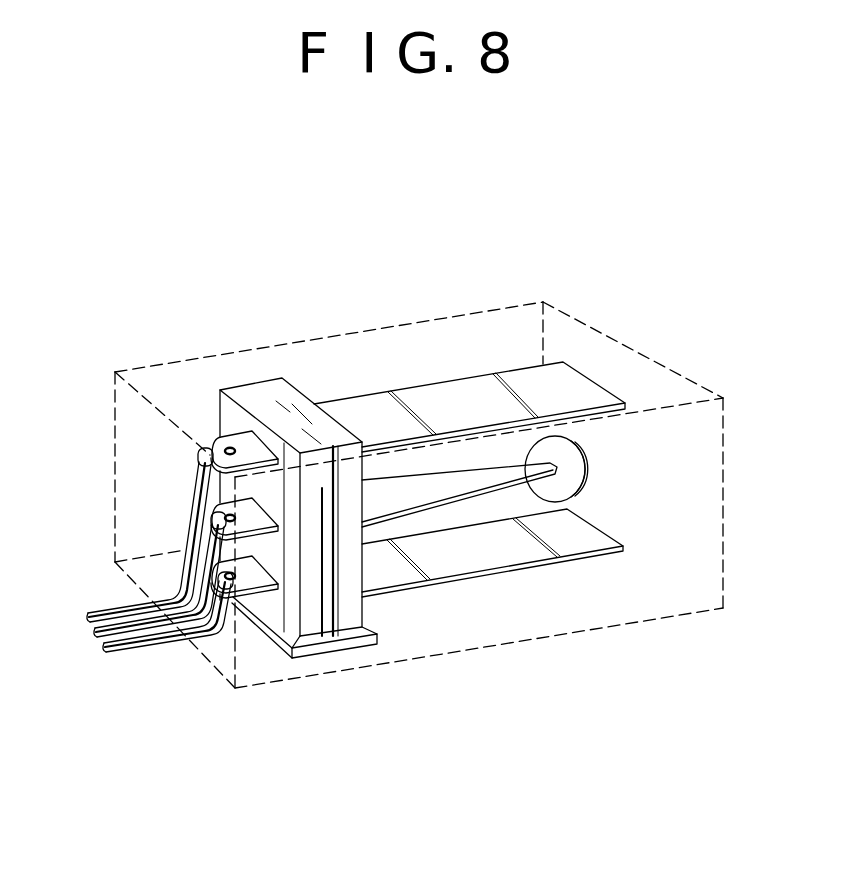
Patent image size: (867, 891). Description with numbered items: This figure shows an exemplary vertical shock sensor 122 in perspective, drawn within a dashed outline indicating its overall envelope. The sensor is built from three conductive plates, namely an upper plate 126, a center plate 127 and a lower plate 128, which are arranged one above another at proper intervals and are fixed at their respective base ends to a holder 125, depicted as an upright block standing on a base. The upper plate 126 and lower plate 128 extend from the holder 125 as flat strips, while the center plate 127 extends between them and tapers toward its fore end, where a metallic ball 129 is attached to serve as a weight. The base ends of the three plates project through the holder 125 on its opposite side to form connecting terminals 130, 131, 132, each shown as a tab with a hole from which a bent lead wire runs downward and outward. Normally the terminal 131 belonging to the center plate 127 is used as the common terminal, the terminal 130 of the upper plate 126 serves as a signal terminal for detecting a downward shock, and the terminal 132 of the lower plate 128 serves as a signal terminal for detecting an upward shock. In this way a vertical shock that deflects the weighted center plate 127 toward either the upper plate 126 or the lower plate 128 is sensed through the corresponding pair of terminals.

The vertical shock sensor 122 is at (407, 312).
The holder 125 is at (257, 390).
The upper plate 126 is at (578, 390).
The center plate 127 is at (466, 495).
The lower plate 128 is at (588, 552).
The metallic ball 129 is at (594, 463).
The connecting terminal 130 is at (240, 443).
The connecting terminal 131 is at (257, 523).
The connecting terminal 132 is at (252, 582).